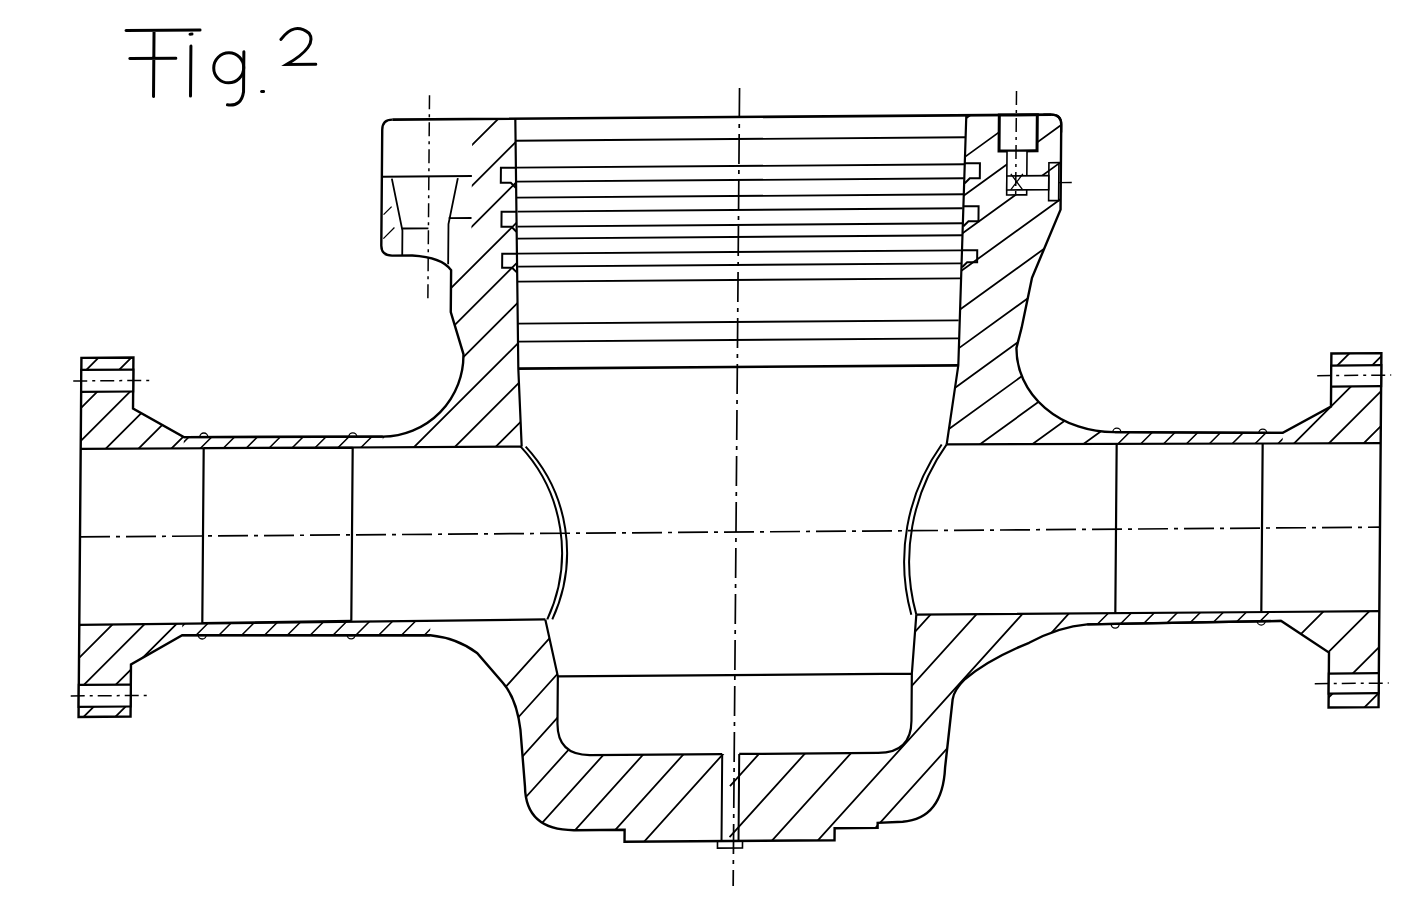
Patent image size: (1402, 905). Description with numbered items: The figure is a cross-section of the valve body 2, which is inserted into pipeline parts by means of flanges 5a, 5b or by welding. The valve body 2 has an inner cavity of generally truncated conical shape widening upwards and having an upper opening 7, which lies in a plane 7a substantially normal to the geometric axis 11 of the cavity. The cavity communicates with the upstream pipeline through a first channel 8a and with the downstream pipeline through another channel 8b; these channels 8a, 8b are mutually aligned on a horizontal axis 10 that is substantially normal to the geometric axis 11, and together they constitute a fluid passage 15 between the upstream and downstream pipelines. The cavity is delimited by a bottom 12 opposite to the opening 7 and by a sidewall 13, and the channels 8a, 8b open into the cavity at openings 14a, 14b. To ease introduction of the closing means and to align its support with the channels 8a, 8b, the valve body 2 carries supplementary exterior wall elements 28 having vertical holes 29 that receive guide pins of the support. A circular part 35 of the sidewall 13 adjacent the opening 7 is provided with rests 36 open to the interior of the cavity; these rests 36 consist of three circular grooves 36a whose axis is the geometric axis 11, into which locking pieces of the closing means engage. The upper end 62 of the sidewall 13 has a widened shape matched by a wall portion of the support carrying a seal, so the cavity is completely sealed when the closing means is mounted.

The valve body 2 is at (366, 153).
The flange 5a is at (121, 353).
The flange 5b is at (1334, 358).
The upper opening 7 is at (556, 117).
The plane 7a is at (1012, 98).
The first channel 8a is at (237, 598).
The channel 8b is at (1198, 578).
The horizontal axis 10 is at (304, 538).
The geometric axis 11 is at (737, 88).
The bottom 12 is at (679, 797).
The sidewall 13 is at (523, 427).
The opening 14a is at (559, 516).
The opening 14b is at (909, 506).
The fluid passage 15 is at (289, 507).
The supplementary exterior wall element 28 is at (381, 250).
The vertical hole 29 is at (416, 257).
The circular part 35 is at (523, 255).
The rest 36 is at (506, 172).
The circular groove 36a is at (653, 270).
The upper end 62 is at (960, 118).